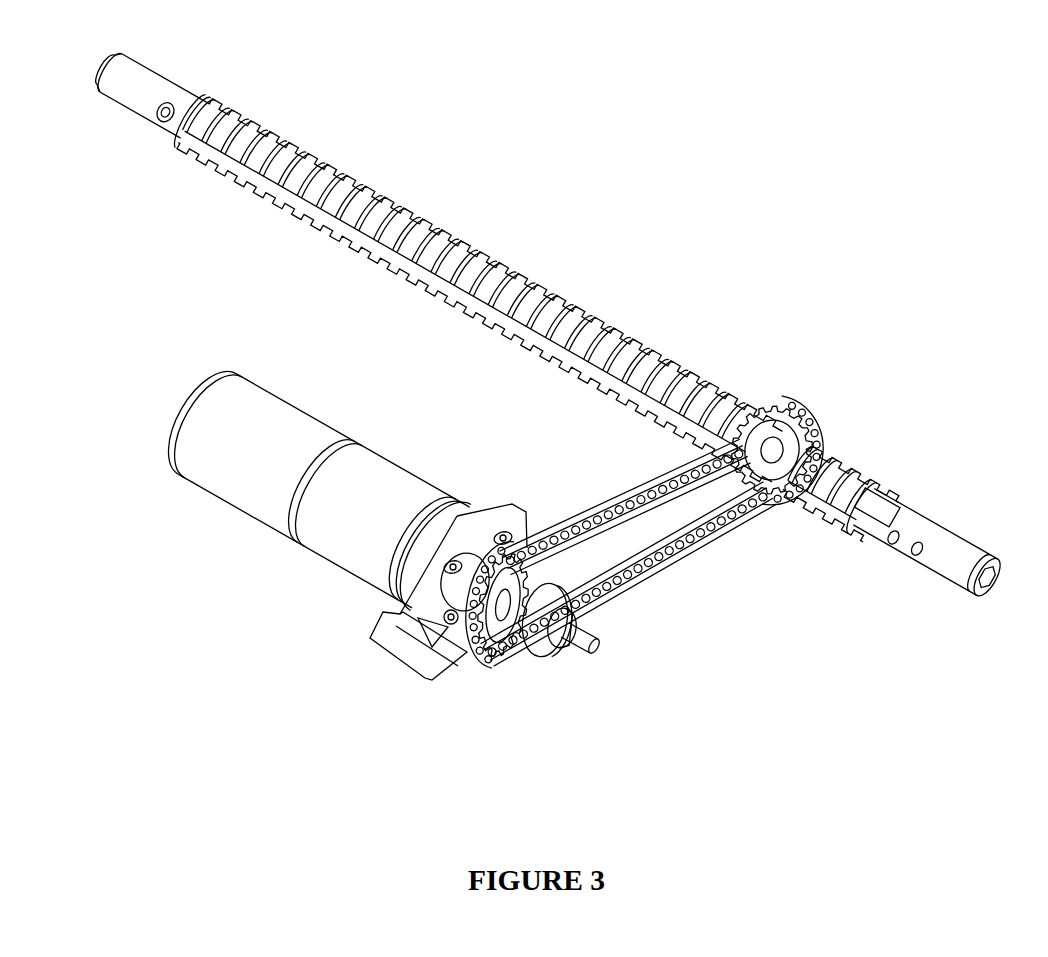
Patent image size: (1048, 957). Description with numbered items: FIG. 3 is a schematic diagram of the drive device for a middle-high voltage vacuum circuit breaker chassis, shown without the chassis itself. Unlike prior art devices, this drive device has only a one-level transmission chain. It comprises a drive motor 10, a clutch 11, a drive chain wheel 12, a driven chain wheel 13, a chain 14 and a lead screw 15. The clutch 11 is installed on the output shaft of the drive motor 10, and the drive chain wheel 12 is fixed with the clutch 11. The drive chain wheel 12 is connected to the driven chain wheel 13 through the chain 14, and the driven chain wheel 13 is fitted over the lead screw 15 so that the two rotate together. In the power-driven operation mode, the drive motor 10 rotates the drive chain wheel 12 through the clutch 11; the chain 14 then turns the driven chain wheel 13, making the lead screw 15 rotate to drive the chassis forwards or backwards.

The drive motor 10 is at (333, 520).
The clutch 11 is at (540, 652).
The drive chain wheel 12 is at (466, 645).
The driven chain wheel 13 is at (798, 433).
The chain 14 is at (730, 528).
The lead screw 15 is at (350, 250).